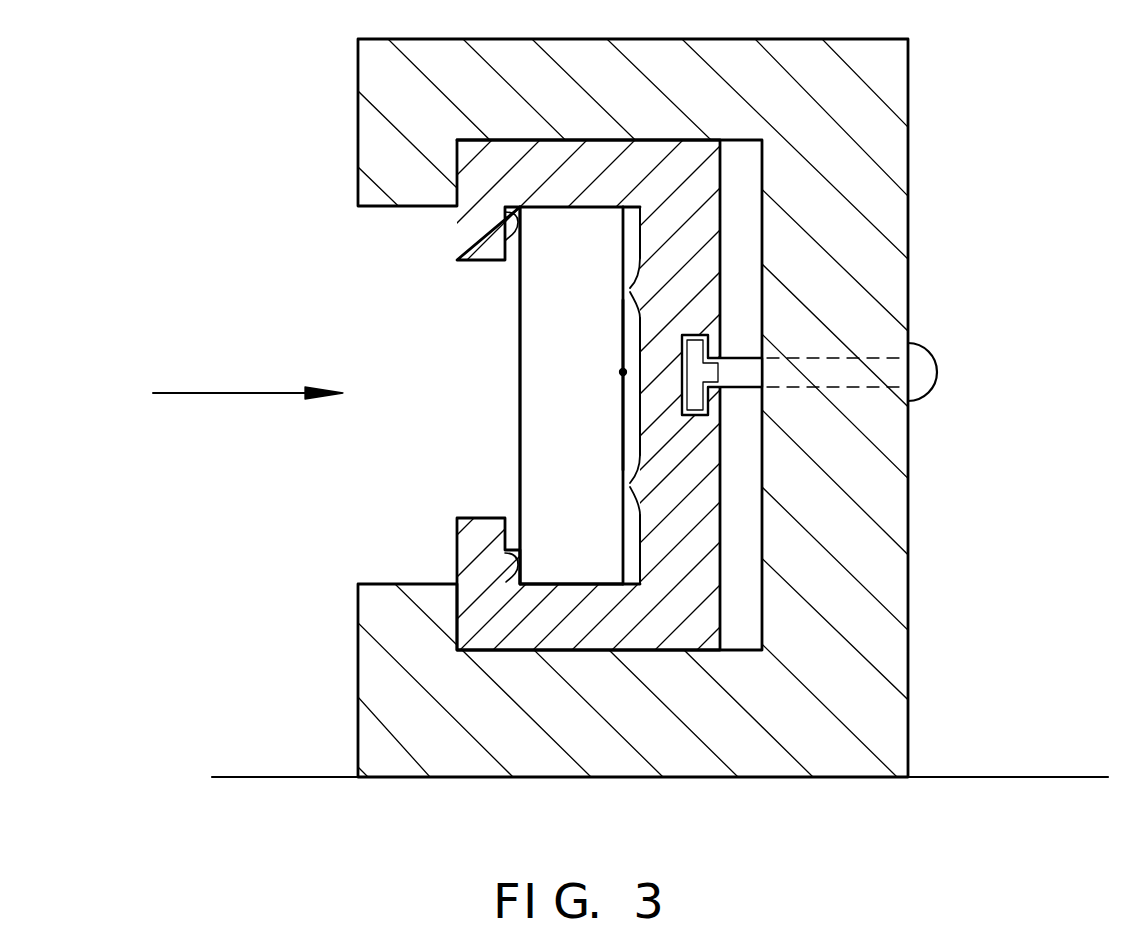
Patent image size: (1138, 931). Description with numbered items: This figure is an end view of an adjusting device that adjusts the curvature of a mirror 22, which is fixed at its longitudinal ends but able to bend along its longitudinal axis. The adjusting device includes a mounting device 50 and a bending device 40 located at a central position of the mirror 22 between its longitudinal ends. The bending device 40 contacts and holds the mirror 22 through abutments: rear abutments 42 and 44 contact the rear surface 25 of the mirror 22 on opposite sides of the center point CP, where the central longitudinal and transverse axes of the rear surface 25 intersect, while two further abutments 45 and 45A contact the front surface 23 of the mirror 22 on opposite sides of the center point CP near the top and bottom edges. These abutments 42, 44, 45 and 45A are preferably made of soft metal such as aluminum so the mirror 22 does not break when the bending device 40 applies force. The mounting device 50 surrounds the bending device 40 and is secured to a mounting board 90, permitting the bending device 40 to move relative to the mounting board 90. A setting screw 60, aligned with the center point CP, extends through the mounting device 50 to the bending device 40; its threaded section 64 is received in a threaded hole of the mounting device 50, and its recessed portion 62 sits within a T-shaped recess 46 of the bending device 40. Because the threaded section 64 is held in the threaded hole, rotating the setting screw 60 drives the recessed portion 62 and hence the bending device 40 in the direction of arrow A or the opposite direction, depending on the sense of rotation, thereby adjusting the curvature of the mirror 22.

The mirror 22 is at (534, 302).
The front surface 23 is at (519, 386).
The rear surface 25 is at (621, 417).
The center point CP is at (622, 372).
The bending device 40 is at (577, 139).
The rear abutment 42 is at (637, 288).
The rear abutment 44 is at (633, 481).
The abutment 45 is at (516, 228).
The abutment 45A is at (516, 546).
The recess 46 is at (694, 334).
The mounting device 50 is at (818, 758).
The setting screw 60 is at (928, 395).
The recessed portion 62 is at (698, 374).
The threaded section 64 is at (876, 358).
The mounting board 90 is at (1025, 777).
The arrow A is at (248, 375).